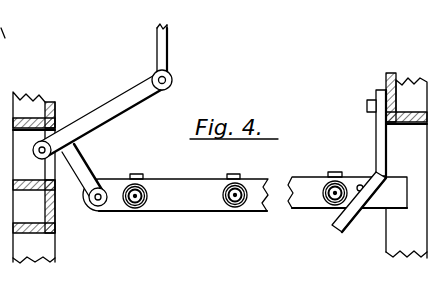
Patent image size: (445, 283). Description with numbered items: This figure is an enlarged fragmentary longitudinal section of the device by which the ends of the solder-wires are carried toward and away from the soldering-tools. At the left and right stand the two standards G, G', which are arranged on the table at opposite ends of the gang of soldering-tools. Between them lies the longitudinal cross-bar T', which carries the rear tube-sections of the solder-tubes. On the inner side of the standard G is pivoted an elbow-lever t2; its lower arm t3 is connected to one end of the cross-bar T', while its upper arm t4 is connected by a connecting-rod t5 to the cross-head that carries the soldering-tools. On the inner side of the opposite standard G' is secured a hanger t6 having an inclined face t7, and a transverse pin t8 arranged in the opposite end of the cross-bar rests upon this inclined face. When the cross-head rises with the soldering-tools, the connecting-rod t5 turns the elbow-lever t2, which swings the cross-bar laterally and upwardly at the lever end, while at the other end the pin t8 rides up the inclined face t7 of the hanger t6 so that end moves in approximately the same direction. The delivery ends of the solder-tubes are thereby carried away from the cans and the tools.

The standard G is at (34, 177).
The standard G' is at (406, 157).
The rack bar / carrier T' is at (175, 192).
The elbow-lever t2 is at (52, 143).
The lower arm t3 is at (84, 162).
The upper arm t4 is at (97, 88).
The connecting-rod t5 is at (167, 43).
The hanger t6 is at (376, 138).
The inclined face t7 is at (332, 219).
The transverse pin t8 is at (358, 185).